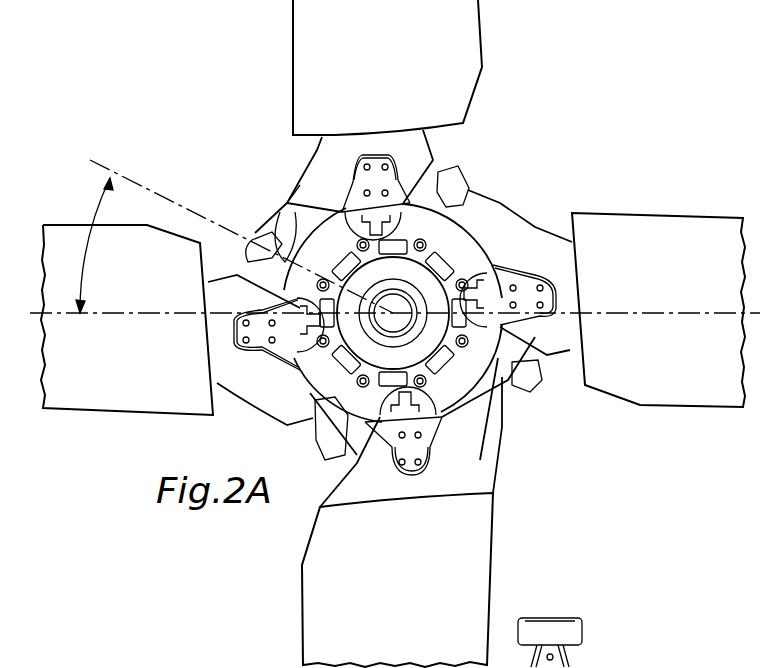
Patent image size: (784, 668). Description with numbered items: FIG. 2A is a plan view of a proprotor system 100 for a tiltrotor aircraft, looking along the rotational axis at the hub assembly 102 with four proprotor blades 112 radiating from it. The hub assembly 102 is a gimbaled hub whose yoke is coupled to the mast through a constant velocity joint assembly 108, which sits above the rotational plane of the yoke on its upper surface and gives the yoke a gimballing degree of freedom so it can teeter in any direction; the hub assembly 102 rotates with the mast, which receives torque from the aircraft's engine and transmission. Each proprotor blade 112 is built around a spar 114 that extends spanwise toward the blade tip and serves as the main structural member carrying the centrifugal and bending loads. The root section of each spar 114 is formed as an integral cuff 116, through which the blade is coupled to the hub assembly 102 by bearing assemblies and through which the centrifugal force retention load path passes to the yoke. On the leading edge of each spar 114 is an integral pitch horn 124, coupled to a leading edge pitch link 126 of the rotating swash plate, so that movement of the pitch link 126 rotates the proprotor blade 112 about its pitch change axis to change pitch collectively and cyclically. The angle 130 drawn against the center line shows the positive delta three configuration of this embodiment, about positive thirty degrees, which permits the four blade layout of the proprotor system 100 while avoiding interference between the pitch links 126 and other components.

The proprotor system 100 is at (583, 134).
The hub assembly 102 is at (432, 172).
The constant velocity joint assembly 108 is at (455, 258).
The proprotor blade 112 is at (389, 43).
The spar 114 is at (373, 143).
The integral cuff 116 is at (338, 147).
The integral pitch horn 124 is at (295, 200).
The leading edge pitch link 126 is at (257, 260).
The angle 130 is at (92, 245).